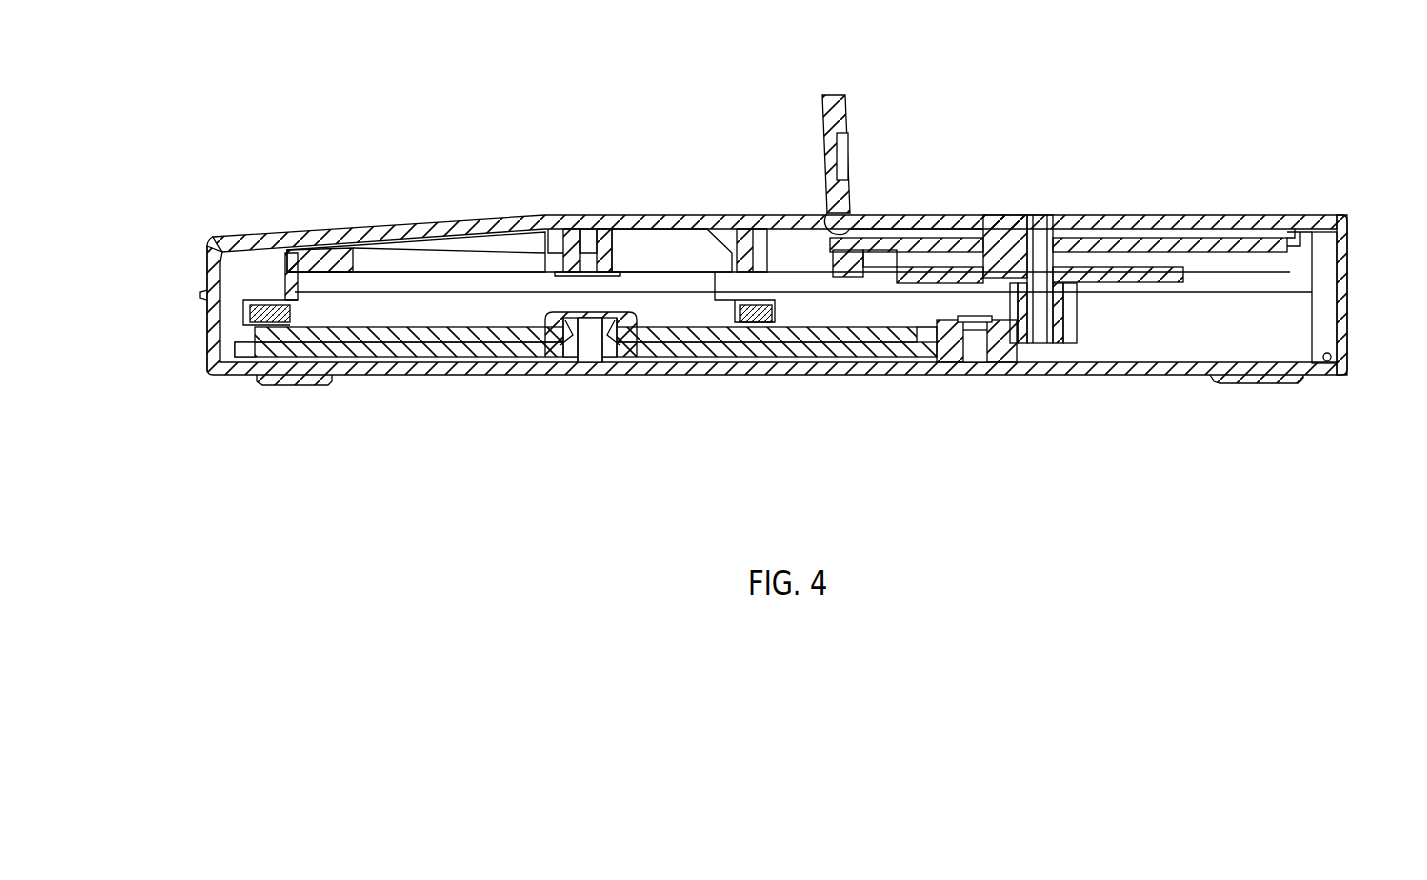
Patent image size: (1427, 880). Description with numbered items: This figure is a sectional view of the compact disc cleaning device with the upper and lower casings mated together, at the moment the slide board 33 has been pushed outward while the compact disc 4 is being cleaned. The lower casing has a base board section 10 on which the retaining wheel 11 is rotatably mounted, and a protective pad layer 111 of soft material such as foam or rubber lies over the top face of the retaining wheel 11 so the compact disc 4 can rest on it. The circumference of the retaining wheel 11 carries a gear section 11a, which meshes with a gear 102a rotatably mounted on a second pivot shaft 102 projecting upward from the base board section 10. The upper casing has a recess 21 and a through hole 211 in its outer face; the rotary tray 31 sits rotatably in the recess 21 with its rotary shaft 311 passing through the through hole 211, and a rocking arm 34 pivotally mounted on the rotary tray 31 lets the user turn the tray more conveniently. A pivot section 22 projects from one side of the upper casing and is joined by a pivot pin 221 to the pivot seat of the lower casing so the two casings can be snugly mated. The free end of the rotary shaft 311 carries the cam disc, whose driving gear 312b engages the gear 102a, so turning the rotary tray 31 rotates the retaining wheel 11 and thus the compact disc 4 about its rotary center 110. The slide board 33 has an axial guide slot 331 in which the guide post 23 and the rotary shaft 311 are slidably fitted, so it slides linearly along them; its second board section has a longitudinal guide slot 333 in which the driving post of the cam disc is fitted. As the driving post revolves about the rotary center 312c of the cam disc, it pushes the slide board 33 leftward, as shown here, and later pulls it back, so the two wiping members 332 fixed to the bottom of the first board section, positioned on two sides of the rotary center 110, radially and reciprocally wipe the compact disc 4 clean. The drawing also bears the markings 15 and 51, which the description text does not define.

The compact disc 4 is at (383, 318).
The base board section 10 is at (425, 378).
The retaining wheel 11 is at (725, 348).
The gear section 11a is at (927, 362).
The center line 15 is at (1190, 265).
The recess 21 is at (1272, 215).
The pivot section 22 is at (1340, 262).
The guide post 23 is at (733, 247).
The rotary tray 31 is at (1157, 215).
The slide board 33 is at (437, 272).
The rocking arm 34 is at (842, 108).
The center line 51 is at (280, 267).
The second pivot shaft 102 is at (985, 365).
The gear 102a is at (965, 365).
The rotary center 110 is at (590, 295).
The protective pad layer 111 is at (470, 348).
The through hole 211 is at (1020, 247).
The pivot pin 221 is at (1338, 352).
The rotary shaft 311 is at (1068, 247).
The driving gear 312b is at (975, 229).
The rotary center 312c is at (1040, 440).
The axial guide slot 331 is at (517, 257).
The wiping member 332 is at (250, 318).
The longitudinal guide slot 333 is at (912, 248).